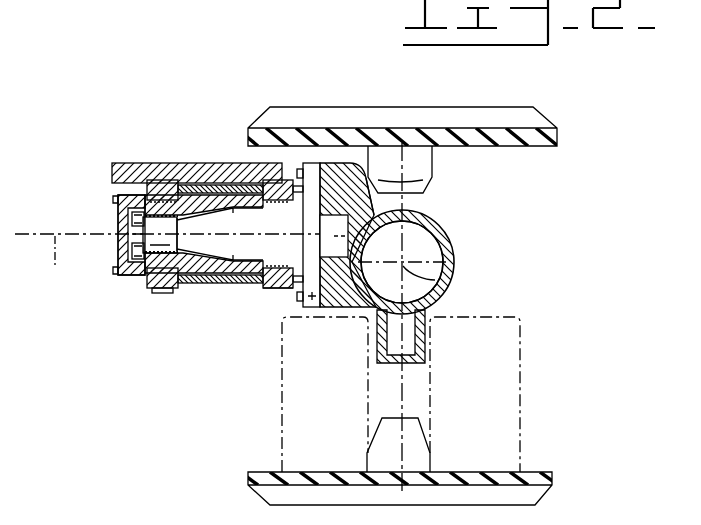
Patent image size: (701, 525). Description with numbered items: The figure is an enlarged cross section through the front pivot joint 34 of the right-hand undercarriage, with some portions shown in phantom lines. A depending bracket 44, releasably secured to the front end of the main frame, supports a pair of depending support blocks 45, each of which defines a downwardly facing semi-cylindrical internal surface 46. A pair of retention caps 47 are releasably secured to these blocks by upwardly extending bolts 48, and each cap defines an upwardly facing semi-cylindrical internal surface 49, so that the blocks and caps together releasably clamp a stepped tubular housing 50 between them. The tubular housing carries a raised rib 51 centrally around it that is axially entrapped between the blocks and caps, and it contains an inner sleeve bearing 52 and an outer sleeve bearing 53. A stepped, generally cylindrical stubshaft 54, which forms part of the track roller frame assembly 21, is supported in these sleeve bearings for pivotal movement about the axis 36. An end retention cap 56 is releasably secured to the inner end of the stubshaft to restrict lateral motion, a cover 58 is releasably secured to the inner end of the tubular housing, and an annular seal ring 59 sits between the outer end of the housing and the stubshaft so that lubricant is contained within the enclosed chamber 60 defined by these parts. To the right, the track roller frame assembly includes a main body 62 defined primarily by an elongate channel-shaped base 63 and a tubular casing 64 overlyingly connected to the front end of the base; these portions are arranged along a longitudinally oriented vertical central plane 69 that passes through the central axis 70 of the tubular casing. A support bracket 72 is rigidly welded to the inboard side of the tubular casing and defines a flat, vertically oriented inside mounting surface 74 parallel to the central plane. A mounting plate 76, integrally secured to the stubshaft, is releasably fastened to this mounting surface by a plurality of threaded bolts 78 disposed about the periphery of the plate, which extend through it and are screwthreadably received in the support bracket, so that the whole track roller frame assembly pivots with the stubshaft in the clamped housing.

The track roller frame assembly 21 is at (420, 231).
The front pivot joint 34 is at (168, 300).
The axis 36 is at (55, 257).
The depending bracket 44 is at (134, 162).
The support blocks 45 is at (172, 182).
The semi-cylindrical internal surface 46 is at (143, 196).
The retention caps 47 is at (147, 288).
The bolts 48 is at (163, 294).
The semi-cylindrical internal surface 49 is at (259, 278).
The tubular housing 50 is at (200, 183).
The raised rib 51 is at (222, 286).
The inner sleeve bearing 52 is at (132, 221).
The outer sleeve bearing 53 is at (348, 235).
The stubshaft 54 is at (291, 233).
The end retention cap 56 is at (142, 240).
The cover 58 is at (120, 256).
The annular seal ring 59 is at (288, 295).
The enclosed chamber 60 is at (208, 270).
The main body 62 is at (444, 227).
The channel-shaped base 63 is at (427, 366).
The tubular casing 64 is at (453, 252).
The central plane 69 is at (436, 182).
The central axis 70 is at (435, 280).
The support bracket 72 is at (382, 210).
The mounting surface 74 is at (306, 301).
The mounting plate 76 is at (335, 214).
The bolts 78 is at (306, 166).